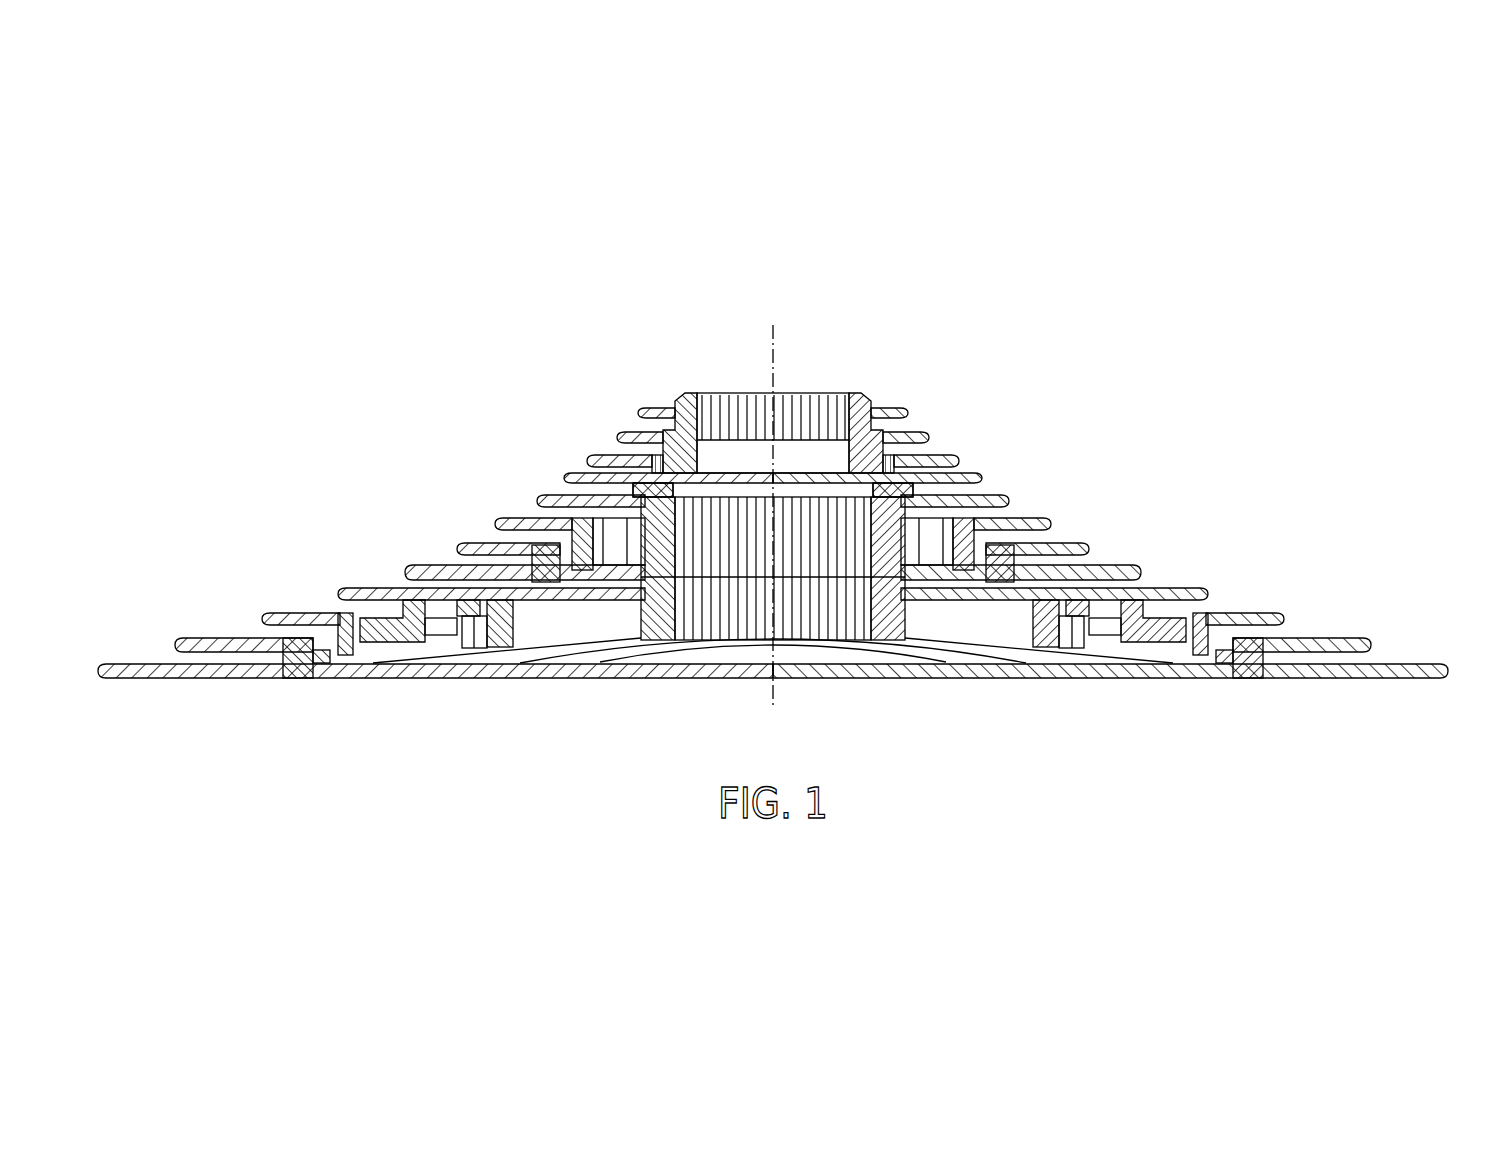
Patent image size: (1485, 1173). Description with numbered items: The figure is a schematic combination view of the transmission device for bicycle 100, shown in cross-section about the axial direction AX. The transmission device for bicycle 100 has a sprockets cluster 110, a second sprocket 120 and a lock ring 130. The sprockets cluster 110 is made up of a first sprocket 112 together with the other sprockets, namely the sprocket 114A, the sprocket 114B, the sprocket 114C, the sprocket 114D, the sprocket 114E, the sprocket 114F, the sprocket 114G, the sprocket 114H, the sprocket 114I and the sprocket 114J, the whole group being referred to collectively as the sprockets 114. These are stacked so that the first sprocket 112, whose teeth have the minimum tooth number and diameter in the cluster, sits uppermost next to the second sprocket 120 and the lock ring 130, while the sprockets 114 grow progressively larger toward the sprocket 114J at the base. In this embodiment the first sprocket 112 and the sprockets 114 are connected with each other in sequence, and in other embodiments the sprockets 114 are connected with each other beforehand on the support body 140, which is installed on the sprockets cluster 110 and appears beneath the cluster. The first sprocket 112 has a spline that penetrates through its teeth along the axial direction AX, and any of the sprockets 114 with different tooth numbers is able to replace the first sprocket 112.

The transmission device for bicycle 100 is at (784, 495).
The sprockets cluster 110 is at (784, 541).
The first sprocket 112 is at (930, 438).
The sprockets 114 is at (784, 595).
The sprocket 114A is at (960, 462).
The sprocket 114B is at (982, 480).
The sprocket 114C is at (1010, 500).
The sprocket 114D is at (1053, 524).
The sprocket 114E is at (1090, 549).
The sprocket 114F is at (1141, 573).
The sprocket 114G is at (1208, 594).
The sprocket 114H is at (1284, 619).
The sprocket 114I is at (1372, 645).
The sprocket 114J is at (1422, 683).
The second sprocket 120 is at (906, 410).
The lock ring 130 is at (886, 384).
The support body 140 is at (881, 645).
The axial direction AX is at (773, 336).